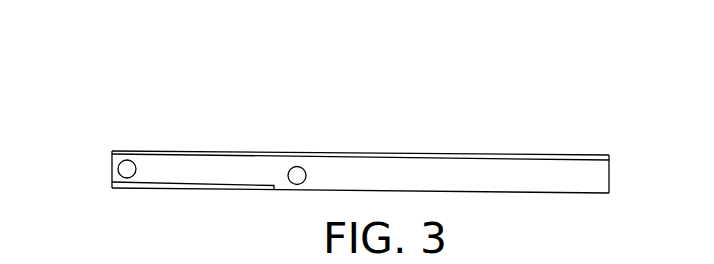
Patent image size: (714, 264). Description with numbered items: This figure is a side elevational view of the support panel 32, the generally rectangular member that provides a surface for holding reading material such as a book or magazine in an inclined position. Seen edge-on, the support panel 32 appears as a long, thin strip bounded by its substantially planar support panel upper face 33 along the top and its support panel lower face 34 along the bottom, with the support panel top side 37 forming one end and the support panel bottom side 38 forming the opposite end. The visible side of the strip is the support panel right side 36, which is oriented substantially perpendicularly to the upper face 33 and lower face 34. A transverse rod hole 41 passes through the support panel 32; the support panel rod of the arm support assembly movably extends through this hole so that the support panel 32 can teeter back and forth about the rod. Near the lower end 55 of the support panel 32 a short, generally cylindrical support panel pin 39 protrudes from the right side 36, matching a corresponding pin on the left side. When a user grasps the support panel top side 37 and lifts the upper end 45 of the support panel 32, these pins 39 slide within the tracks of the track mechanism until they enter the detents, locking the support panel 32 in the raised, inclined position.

The support panel 32 is at (451, 125).
The support panel upper face 33 is at (388, 153).
The support panel lower face 34 is at (513, 192).
The support panel right side 36 is at (433, 190).
The support panel top side 37 is at (609, 175).
The support panel bottom side 38 is at (112, 172).
The support panel pin 39 is at (120, 166).
The transverse rod hole 41 is at (302, 168).
The upper end 45 is at (483, 173).
The lower end 55 is at (198, 167).